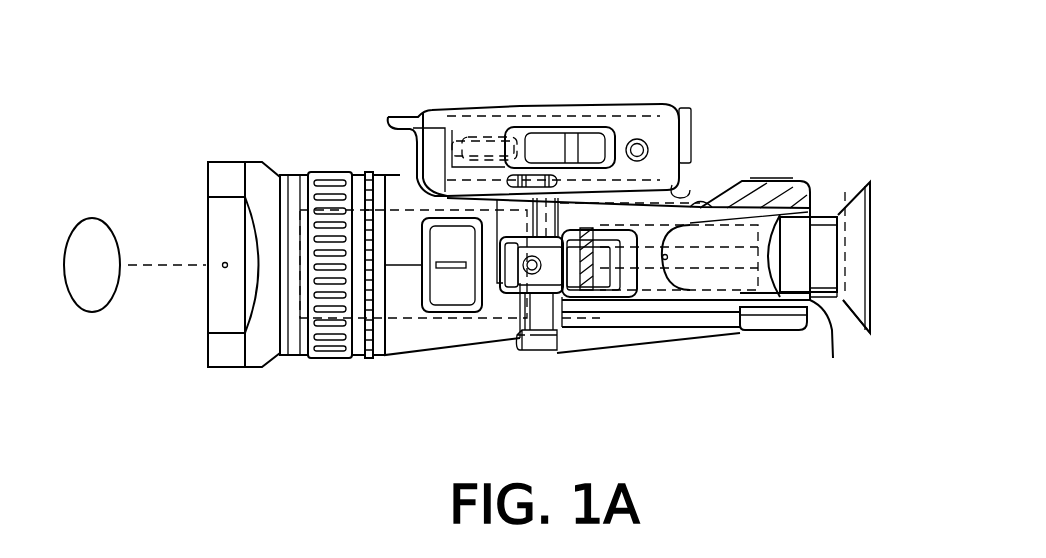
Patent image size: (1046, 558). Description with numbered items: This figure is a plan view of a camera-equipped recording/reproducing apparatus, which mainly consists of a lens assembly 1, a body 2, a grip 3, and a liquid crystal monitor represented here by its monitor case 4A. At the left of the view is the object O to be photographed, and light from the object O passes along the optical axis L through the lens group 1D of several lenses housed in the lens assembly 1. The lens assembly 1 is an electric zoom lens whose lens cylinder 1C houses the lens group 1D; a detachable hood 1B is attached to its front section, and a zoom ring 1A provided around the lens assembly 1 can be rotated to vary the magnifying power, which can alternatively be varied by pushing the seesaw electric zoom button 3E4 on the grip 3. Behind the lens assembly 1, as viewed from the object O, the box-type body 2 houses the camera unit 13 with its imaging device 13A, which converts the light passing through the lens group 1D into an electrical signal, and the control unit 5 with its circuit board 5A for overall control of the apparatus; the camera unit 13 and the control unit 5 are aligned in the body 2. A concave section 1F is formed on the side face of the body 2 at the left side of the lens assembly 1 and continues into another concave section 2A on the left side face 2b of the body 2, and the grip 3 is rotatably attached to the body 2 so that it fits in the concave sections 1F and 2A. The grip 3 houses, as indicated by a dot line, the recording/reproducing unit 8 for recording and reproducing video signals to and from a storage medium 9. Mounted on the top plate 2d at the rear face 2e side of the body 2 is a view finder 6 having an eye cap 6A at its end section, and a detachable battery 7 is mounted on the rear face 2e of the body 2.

The lens assembly 1 is at (292, 106).
The zoom ring 1A is at (330, 350).
The detachable hood 1B is at (228, 174).
The lens cylinder 1C is at (355, 173).
The lens group 1D is at (418, 323).
The concave section 1F is at (393, 186).
The body 2 is at (786, 140).
The concave section 2A is at (707, 196).
The left side face 2b is at (740, 184).
The top plate 2d is at (768, 302).
The rear face 2e is at (815, 308).
The grip 3 is at (569, 92).
The seesaw electric zoom button 3E4 is at (596, 126).
The monitor case 4A is at (735, 330).
The control unit 5 is at (655, 292).
The circuit board 5A is at (712, 268).
The view finder 6 is at (832, 216).
The eye cap 6A is at (860, 340).
The detachable battery 7 is at (850, 192).
The recording/reproducing unit 8 is at (500, 116).
The storage medium 9 is at (475, 130).
The camera unit 13 is at (600, 300).
The imaging device 13A is at (593, 230).
The optical axis L is at (143, 266).
The object O is at (92, 312).